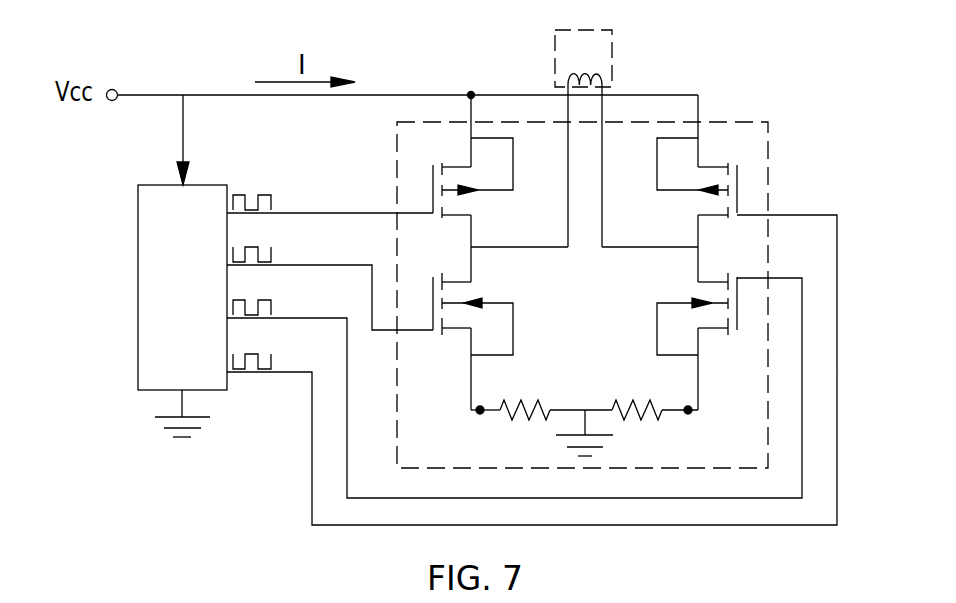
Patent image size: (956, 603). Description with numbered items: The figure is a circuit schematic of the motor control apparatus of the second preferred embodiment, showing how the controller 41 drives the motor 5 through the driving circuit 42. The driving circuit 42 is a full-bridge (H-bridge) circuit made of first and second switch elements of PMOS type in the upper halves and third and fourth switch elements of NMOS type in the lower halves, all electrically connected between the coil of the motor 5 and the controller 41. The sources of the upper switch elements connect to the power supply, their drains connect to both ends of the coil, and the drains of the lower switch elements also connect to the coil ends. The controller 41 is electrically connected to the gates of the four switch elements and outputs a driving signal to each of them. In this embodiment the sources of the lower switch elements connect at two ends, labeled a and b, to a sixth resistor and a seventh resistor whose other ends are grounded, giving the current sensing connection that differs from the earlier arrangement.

The motor 5 is at (612, 58).
The controller 41 is at (138, 287).
The driving circuit 42 is at (738, 121).